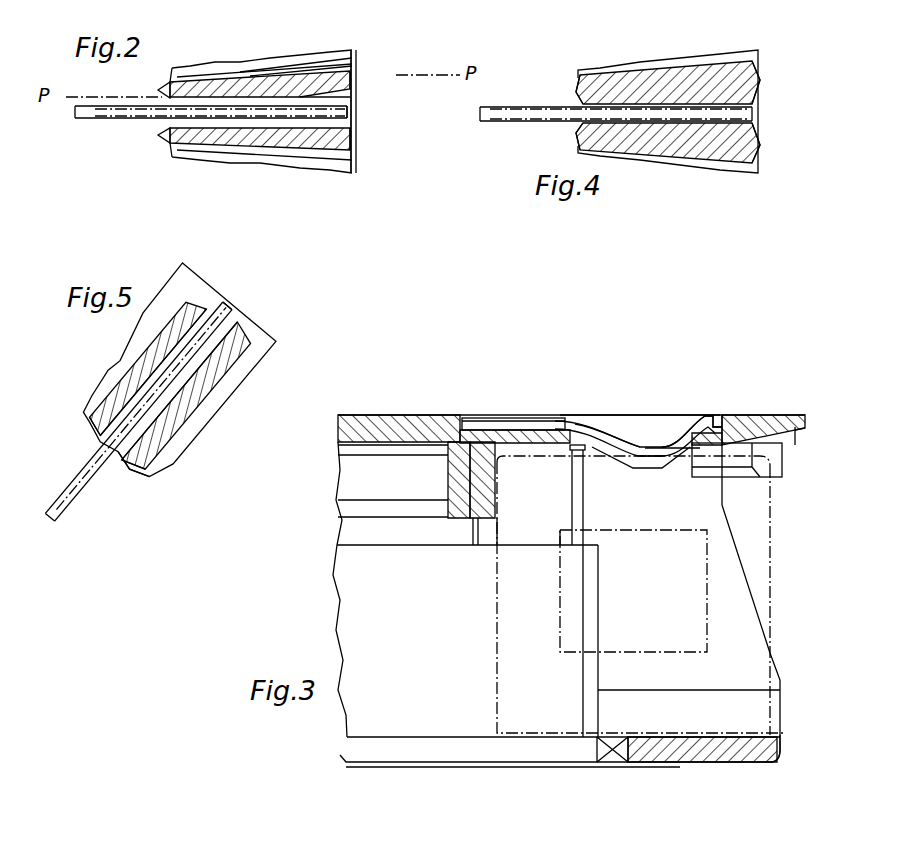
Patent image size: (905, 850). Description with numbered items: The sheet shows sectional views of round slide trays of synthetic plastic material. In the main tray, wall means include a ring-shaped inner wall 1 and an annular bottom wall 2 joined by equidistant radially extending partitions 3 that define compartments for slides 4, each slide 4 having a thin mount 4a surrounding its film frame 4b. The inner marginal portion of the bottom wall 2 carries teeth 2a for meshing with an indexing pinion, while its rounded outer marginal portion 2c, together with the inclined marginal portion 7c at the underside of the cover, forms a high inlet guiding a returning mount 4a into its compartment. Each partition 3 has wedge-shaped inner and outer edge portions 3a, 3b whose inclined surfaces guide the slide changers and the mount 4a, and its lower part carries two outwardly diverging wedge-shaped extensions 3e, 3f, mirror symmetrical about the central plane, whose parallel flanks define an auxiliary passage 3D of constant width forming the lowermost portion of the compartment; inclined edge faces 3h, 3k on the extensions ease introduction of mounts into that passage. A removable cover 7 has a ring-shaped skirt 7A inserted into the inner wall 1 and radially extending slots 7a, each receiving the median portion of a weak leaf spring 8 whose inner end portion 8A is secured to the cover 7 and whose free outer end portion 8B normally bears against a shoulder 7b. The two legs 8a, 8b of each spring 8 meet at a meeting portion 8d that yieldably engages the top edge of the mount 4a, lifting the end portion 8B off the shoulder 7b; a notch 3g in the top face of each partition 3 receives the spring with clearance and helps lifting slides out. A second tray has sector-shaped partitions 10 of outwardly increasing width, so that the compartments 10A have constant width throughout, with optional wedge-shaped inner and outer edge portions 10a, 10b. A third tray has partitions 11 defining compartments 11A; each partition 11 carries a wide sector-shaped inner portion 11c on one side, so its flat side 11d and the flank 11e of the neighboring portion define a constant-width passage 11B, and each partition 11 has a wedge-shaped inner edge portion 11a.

In FIG. 3, the inner wall 1 is at (482, 491).
In FIG. 3, the bottom wall 2 is at (684, 750).
In FIG. 3, the teeth 2a is at (601, 750).
In FIG. 3, the outer marginal portion of the bottom wall 2c is at (770, 736).
In FIG. 2, the partition 3 is at (326, 90).
In FIG. 3, the partition 3 is at (734, 538).
In FIG. 2, the inner edge portion 3a is at (158, 88).
In FIG. 2, the outer edge portion 3b is at (355, 86).
In FIG. 2, the passage 3D is at (345, 113).
In FIG. 2, the extension 3e is at (273, 78).
In FIG. 2, the extension 3f is at (353, 58).
In FIG. 3, the notch 3g is at (655, 464).
In FIG. 2, the edge face 3h is at (318, 72).
In FIG. 2, the edge face 3k is at (357, 97).
In FIG. 2, the slide 4 is at (118, 118).
In FIG. 4, the slide 4 is at (533, 112).
In FIG. 5, the slide 4 is at (238, 319).
In FIG. 3, the slide 4 is at (776, 578).
In FIG. 3, the mount 4a is at (505, 598).
In FIG. 3, the film frame 4b is at (652, 602).
In FIG. 3, the cover 7 is at (426, 412).
In FIG. 3, the skirt 7A is at (470, 478).
In FIG. 3, the slot 7a is at (643, 427).
In FIG. 3, the shoulder 7b is at (715, 428).
In FIG. 3, the marginal portion of the cover 7c is at (793, 462).
In FIG. 3, the leaf spring 8 is at (562, 414).
In FIG. 3, the inner end portion 8A is at (477, 418).
In FIG. 3, the outer end portion 8B is at (700, 416).
In FIG. 3, the leg 8a is at (612, 432).
In FIG. 3, the leg 8b is at (668, 432).
In FIG. 3, the meeting portion 8d is at (640, 462).
In FIG. 4, the partition 10 is at (740, 73).
In FIG. 4, the compartment 10A is at (751, 113).
In FIG. 4, the inner edge portion 10a is at (576, 88).
In FIG. 4, the outer edge portion 10b is at (763, 80).
In FIG. 5, the partition 11 is at (181, 324).
In FIG. 5, the compartment 11A is at (237, 336).
In FIG. 5, the passage 11B is at (130, 400).
In FIG. 5, the inner edge portion 11a is at (128, 458).
In FIG. 5, the sector-shaped inner portion 11c is at (182, 412).
In FIG. 5, the flat side 11d is at (242, 362).
In FIG. 5, the flank 11e is at (166, 424).